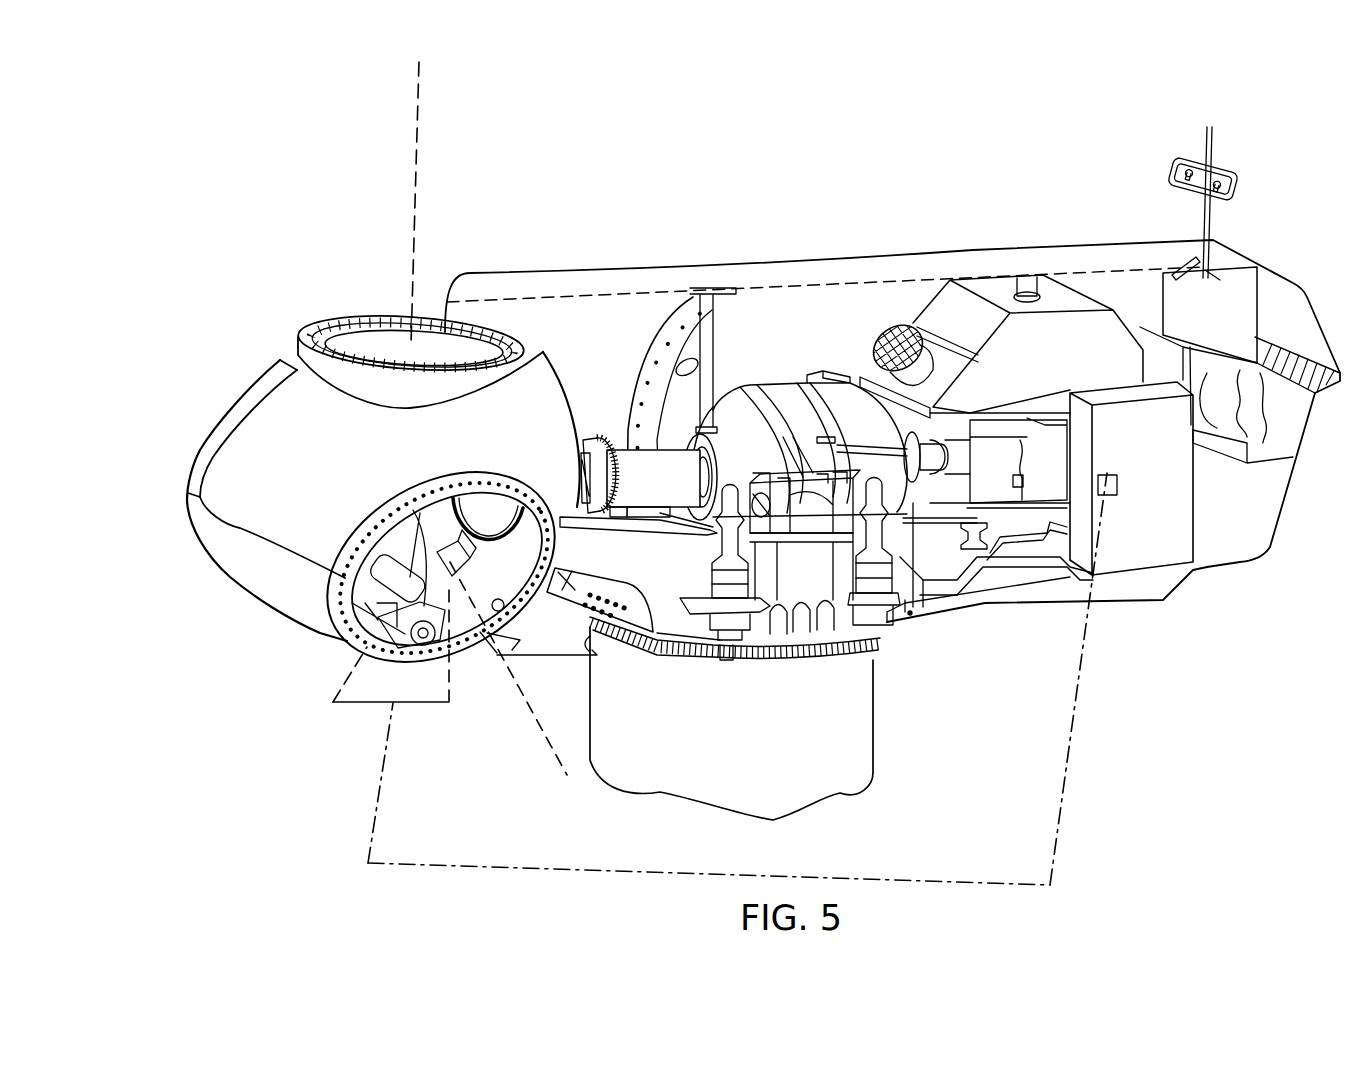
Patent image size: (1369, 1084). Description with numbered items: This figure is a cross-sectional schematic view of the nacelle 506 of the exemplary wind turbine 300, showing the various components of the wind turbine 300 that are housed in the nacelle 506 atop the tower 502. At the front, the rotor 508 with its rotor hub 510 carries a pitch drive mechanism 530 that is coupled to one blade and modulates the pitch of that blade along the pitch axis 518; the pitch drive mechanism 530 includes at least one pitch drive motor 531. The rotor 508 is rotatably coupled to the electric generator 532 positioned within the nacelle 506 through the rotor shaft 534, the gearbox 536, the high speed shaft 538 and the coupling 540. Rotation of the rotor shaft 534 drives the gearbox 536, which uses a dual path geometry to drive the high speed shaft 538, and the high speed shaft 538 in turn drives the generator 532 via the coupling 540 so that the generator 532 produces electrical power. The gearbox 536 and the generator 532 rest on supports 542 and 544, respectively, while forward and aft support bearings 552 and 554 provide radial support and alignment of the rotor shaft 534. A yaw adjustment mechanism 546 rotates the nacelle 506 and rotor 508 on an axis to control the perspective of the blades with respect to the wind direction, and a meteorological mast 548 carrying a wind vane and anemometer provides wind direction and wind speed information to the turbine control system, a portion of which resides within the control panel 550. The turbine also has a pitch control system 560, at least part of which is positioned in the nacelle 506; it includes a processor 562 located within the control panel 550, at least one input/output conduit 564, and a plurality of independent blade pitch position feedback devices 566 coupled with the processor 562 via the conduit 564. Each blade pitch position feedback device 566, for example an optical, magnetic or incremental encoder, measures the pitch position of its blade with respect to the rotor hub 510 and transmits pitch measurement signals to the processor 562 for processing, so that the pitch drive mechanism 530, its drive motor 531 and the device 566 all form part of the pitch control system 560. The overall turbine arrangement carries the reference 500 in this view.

The wind turbine 300 is at (235, 611).
The wind turbine 500 is at (362, 154).
The tower 502 is at (785, 793).
The nacelle 506 is at (644, 206).
The rotor 508 is at (172, 479).
The rotor hub 510 is at (297, 352).
The pitch axis 518 is at (424, 97).
The pitch drive mechanism 530 is at (366, 498).
The pitch drive motor 531 is at (393, 577).
The electric generator 532 is at (997, 477).
The rotor shaft 534 is at (620, 465).
The gearbox 536 is at (797, 400).
The high speed shaft 538 is at (910, 605).
The coupling 540 is at (938, 430).
The support 542 is at (807, 537).
The support 544 is at (985, 575).
The yaw adjustment mechanism 546 is at (733, 630).
The meteorological mast 548 is at (1240, 170).
The control panel 550 is at (1183, 500).
The forward support bearing 552 is at (592, 485).
The aft support bearing 554 is at (737, 400).
The pitch control system 560 is at (397, 673).
The processor 562 is at (1118, 493).
The input/output (I/O) conduit 564 is at (1064, 806).
The blade pitch position feedback device 566 is at (513, 560).